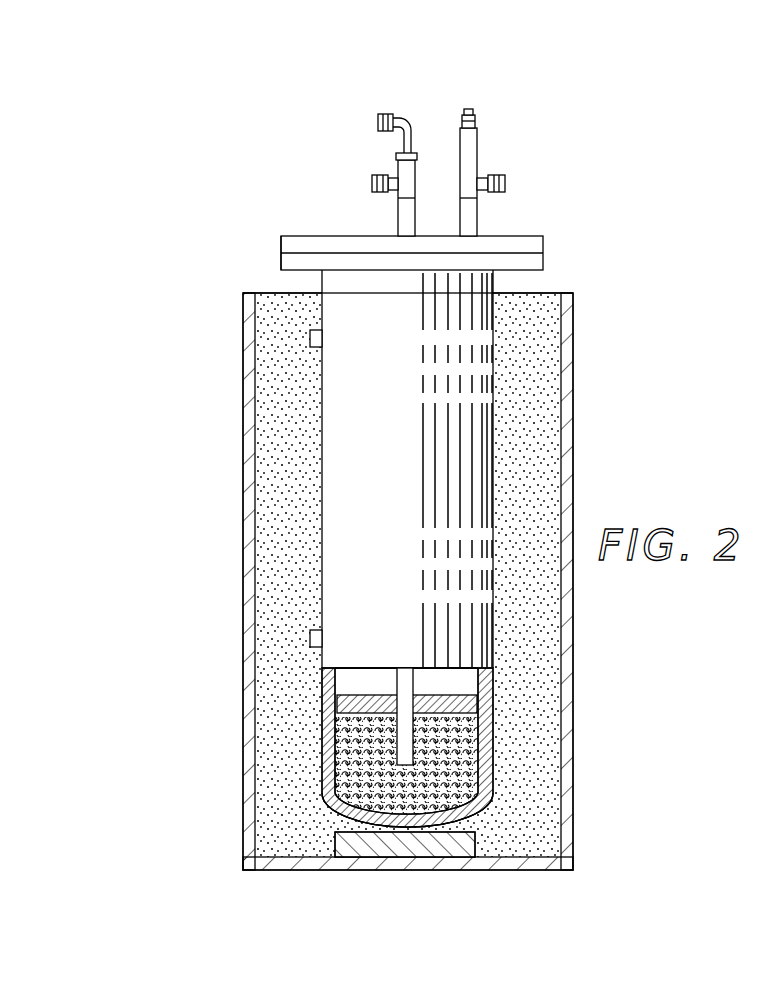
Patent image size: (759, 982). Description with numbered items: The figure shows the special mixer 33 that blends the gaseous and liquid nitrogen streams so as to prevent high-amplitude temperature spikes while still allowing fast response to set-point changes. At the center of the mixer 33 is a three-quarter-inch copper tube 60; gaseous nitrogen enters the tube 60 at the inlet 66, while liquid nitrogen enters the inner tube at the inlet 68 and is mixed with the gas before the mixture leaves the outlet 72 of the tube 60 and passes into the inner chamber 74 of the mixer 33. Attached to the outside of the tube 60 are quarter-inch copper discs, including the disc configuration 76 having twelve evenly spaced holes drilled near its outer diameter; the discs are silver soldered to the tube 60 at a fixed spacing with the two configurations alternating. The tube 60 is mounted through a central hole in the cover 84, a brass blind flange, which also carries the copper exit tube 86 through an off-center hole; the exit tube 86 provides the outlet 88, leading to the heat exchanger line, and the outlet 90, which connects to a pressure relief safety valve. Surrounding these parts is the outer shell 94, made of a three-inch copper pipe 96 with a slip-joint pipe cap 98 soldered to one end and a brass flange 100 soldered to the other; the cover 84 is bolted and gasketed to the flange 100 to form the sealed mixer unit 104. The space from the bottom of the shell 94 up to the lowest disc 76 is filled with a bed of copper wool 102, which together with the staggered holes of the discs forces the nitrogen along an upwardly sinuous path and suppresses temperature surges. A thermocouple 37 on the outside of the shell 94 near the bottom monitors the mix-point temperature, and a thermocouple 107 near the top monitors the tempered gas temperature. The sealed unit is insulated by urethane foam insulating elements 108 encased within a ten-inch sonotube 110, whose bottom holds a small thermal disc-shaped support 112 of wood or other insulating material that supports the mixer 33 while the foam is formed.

The mixer 33 is at (512, 116).
The inlet 68 is at (382, 118).
The sealed mixer unit 104 is at (431, 133).
The outlet 90 is at (466, 112).
The outlet 88 is at (500, 178).
The inlet 66 is at (373, 181).
The copper tube 60 is at (397, 222).
The exit tube 86 is at (480, 232).
The cover 84 is at (545, 248).
The outer shell 94 is at (514, 284).
The brass flange 100 is at (282, 258).
The copper pipe 96 is at (320, 285).
The thermocouple 107 is at (310, 340).
The sonotube 110 is at (572, 405).
The insulating elements 108 is at (517, 492).
The inner chamber 74 is at (400, 466).
The thermocouple 37 is at (310, 639).
The disc configuration 76 is at (373, 694).
The slip-joint pipe cap 98 is at (430, 823).
The copper wool 102 is at (457, 757).
The outlet 72 is at (470, 821).
The thermal disc-shaped support 112 is at (353, 850).